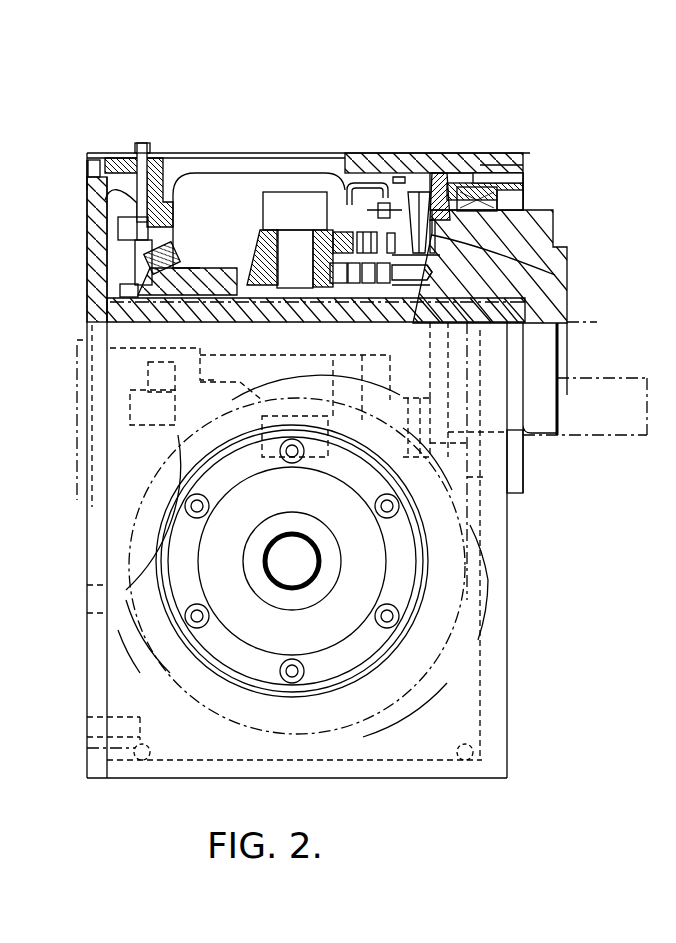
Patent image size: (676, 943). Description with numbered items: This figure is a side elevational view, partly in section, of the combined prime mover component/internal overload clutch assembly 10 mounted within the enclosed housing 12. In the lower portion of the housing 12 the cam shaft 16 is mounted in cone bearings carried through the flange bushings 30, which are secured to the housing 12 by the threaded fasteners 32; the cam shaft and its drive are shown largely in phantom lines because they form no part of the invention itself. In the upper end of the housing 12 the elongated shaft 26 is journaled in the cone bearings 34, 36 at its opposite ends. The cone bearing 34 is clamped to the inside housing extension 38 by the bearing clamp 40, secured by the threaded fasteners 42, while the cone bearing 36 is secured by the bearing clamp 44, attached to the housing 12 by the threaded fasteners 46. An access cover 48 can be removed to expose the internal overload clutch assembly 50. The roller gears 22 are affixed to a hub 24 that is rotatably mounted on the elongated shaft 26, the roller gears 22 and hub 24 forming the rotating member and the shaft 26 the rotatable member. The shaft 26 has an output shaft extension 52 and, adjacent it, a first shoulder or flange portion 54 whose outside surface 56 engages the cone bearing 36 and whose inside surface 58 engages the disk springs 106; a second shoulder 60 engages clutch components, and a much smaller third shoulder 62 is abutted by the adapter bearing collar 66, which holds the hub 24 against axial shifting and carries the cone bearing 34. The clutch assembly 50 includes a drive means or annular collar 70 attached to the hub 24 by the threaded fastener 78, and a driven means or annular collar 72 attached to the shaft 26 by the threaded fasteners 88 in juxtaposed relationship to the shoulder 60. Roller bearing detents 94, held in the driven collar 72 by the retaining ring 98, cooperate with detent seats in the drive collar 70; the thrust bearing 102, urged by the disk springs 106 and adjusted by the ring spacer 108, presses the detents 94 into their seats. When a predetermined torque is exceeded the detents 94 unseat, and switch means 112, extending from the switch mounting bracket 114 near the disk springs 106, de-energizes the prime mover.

The combined prime mover component/internal overload clutch assembly 10 is at (594, 125).
The housing 12 is at (466, 187).
The cam shaft 16 is at (300, 555).
The roller gears 22 is at (262, 210).
The hub 24 is at (262, 282).
The elongated shaft 26 is at (238, 298).
The flange bushings 30 is at (335, 660).
The threaded fasteners 32 is at (400, 612).
The cone bearing 34 is at (178, 265).
The cone bearing 36 is at (522, 178).
The inside housing extension 38 is at (155, 195).
The bearing clamp 40 is at (118, 172).
The threaded fasteners 42 is at (86, 188).
The bearing clamp 44 is at (523, 190).
The threaded fasteners 46 is at (523, 168).
The access cover 48 is at (165, 175).
The internal overload clutch assembly 50 is at (345, 200).
The output shaft extension 52 is at (531, 232).
The first shoulder or flange portion 54 is at (480, 178).
The outside surface 56 is at (500, 176).
The inside surface 58 is at (452, 198).
The second shoulder 60 is at (400, 287).
The third shoulder 62 is at (210, 300).
The adapter bearing collar 66 is at (162, 298).
The drive means or annular collar 70 is at (368, 285).
The driven means or annular collar 72 is at (413, 282).
The threaded fastener 78 is at (340, 285).
The threaded fasteners 88 is at (432, 275).
The roller bearing detents 94 is at (345, 232).
The retaining ring 98 is at (365, 228).
The thrust bearing 102 is at (448, 461).
The disk springs 106 is at (420, 192).
The ring spacer 108 is at (566, 275).
The switch means 112 is at (378, 203).
The switch mounting bracket 114 is at (399, 177).